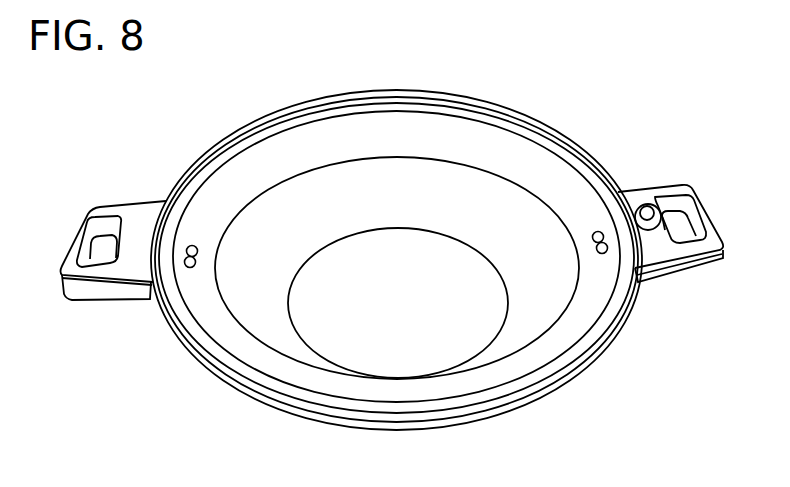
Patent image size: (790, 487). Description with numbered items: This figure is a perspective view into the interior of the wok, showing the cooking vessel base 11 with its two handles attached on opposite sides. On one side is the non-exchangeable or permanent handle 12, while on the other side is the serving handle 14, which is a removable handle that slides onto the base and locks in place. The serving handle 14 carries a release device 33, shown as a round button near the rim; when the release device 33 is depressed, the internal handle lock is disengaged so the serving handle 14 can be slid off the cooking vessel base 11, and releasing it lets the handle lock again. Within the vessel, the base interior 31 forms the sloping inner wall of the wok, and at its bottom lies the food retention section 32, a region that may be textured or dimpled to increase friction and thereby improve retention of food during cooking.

The cooking vessel base 11 is at (573, 362).
The permanent handle 12 is at (147, 222).
The serving handle 14 is at (690, 190).
The base interior 31 is at (472, 150).
The food retention section 32 is at (277, 225).
The release device 33 is at (648, 208).